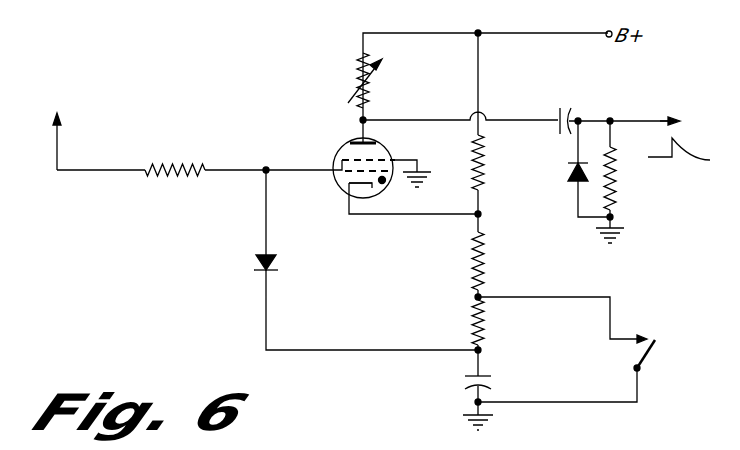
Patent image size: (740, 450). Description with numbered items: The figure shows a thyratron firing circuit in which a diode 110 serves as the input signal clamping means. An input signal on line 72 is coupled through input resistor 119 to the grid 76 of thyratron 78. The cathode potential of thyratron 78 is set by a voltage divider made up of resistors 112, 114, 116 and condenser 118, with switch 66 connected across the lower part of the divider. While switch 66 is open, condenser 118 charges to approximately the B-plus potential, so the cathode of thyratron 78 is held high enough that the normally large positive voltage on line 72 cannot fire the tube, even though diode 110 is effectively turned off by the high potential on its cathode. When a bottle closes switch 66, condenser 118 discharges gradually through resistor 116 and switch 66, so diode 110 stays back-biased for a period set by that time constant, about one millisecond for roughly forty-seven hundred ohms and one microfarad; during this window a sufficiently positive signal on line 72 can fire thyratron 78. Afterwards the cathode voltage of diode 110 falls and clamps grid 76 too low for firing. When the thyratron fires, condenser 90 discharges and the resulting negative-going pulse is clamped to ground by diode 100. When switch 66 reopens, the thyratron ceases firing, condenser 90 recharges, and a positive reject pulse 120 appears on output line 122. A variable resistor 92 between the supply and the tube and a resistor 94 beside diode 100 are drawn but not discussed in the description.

The line 72 is at (60, 149).
The input resistor 119 is at (184, 163).
The grid 76 is at (341, 153).
The thyratron 78 is at (341, 190).
The variable resistor 92 is at (388, 80).
The condenser 90 is at (561, 108).
The output line 122 is at (662, 104).
The reject pulse 120 is at (688, 153).
The diode 100 is at (567, 185).
The resistor 94 is at (618, 197).
The resistor 112 is at (484, 177).
The resistor 114 is at (484, 278).
The resistor 116 is at (484, 337).
The condenser 118 is at (494, 379).
The diode 110 is at (278, 264).
The switch 66 is at (648, 362).